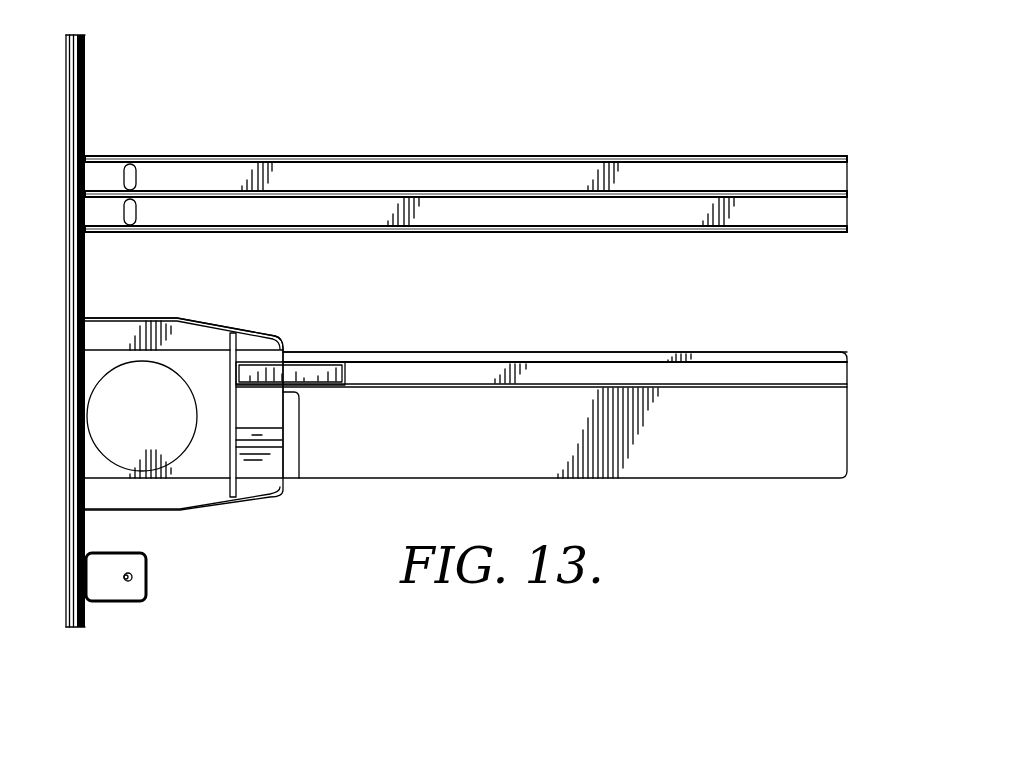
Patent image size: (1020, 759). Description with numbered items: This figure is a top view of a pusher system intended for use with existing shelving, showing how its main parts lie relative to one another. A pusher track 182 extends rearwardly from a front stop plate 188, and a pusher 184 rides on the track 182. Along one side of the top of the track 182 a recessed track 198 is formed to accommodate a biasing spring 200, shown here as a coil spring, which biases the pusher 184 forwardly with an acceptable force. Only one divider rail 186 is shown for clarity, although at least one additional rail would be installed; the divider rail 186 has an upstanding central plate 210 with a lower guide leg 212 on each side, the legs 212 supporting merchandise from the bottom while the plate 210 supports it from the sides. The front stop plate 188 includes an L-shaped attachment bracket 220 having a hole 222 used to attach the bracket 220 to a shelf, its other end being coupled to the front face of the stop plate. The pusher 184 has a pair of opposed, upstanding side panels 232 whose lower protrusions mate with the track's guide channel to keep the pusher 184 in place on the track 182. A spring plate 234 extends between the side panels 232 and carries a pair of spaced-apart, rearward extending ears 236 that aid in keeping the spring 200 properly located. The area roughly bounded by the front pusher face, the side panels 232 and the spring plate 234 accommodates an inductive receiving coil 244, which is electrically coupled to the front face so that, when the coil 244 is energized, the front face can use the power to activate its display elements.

The pusher track 182 is at (849, 420).
The pusher 184 is at (178, 318).
The divider rail 186 is at (745, 155).
The front stop plate 188 is at (65, 52).
The recessed track 198 is at (870, 353).
The biasing spring 200 is at (333, 362).
The upstanding central plate 210 is at (848, 193).
The lower guide legs 212 is at (832, 155).
The L-shaped attachment bracket 220 is at (105, 603).
The hole 222 is at (134, 577).
The side panels 232 is at (120, 318).
The spring plate 234 is at (237, 345).
The rearward extending ears 236 is at (285, 345).
The inductive receiving coil 244 is at (160, 425).